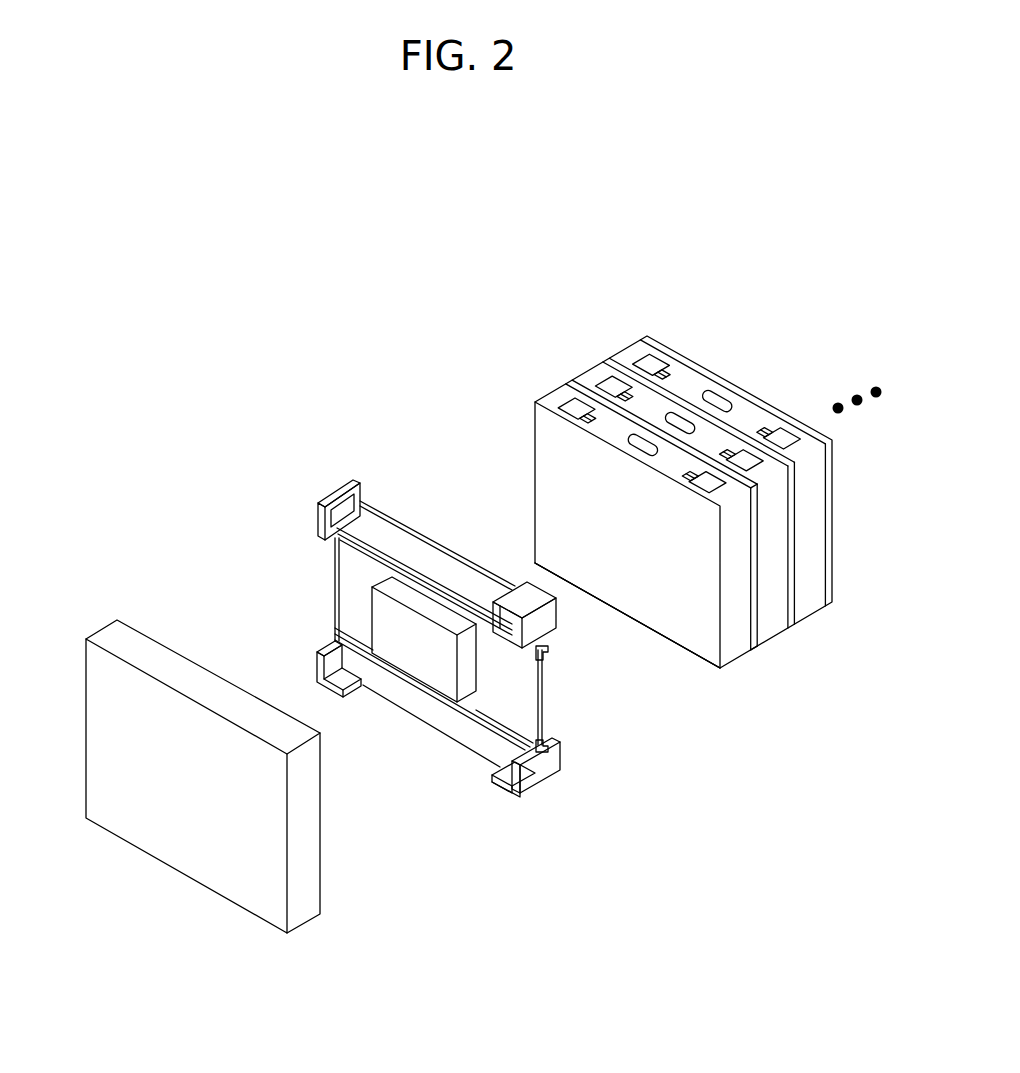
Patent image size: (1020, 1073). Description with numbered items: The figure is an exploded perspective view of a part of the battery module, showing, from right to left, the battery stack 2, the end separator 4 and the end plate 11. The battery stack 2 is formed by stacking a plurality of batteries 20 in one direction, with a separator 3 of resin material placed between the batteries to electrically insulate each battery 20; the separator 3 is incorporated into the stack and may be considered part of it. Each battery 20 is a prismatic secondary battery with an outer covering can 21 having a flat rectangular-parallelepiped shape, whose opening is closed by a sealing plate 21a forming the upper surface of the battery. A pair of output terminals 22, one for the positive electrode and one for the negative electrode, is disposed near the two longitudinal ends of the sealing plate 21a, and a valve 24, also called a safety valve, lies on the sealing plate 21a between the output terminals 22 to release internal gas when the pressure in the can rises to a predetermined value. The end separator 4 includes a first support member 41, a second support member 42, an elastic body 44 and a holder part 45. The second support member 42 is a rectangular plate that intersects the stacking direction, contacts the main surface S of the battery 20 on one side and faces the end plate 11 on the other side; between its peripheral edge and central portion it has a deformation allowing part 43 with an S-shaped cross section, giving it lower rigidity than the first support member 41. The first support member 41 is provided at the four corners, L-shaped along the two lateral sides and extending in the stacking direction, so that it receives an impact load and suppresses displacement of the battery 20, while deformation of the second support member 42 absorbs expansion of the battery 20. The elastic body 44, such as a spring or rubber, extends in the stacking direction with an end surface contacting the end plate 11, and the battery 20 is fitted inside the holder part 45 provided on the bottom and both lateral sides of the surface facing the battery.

The battery stack 2 is at (671, 482).
The battery 20 is at (605, 501).
The sealing plate 21a is at (555, 395).
The outer covering can 21 is at (684, 624).
The surface S is at (637, 570).
The output terminal 22 is at (580, 402).
The valve 24 is at (637, 449).
The separator 3 is at (753, 645).
The end plate 11 is at (97, 700).
The end separator 4 is at (444, 642).
The first support member 41 is at (325, 493).
The second support member 42 is at (543, 690).
The deformation allowing part 43 is at (546, 655).
The holder part 45 is at (358, 478).
The elastic body 44 is at (415, 660).